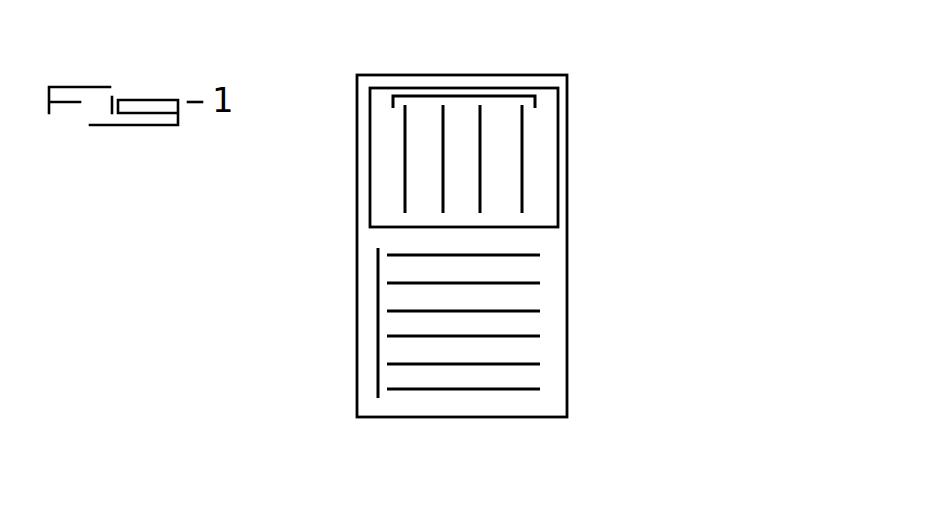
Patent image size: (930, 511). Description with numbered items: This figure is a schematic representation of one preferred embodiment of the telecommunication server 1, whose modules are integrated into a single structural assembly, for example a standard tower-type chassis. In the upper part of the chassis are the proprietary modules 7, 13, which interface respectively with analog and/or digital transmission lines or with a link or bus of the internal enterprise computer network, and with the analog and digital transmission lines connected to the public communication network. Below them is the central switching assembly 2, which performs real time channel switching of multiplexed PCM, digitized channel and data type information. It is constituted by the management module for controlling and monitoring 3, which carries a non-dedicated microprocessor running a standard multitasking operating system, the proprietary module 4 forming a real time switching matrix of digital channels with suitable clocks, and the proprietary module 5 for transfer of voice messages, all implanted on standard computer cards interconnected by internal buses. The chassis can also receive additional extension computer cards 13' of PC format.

The telecommunication server 1 is at (328, 398).
The central switching assembly 2 is at (566, 300).
The management module for controlling and monitoring 3 is at (378, 275).
The proprietary module forming a real time switching matrix 4 is at (513, 280).
The proprietary module for transfer of voice messages 5 is at (525, 309).
The proprietary interfacing modules 7 is at (562, 131).
The proprietary modules interfacing with public network transmission lines 13 is at (562, 131).
The additional extension computer cards 13' is at (556, 349).